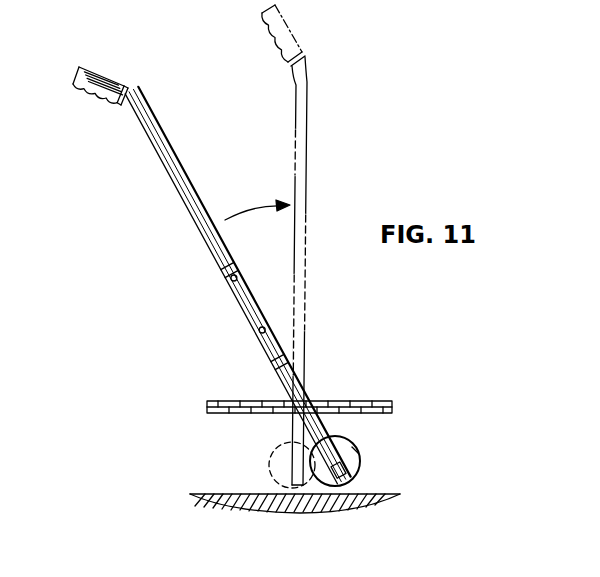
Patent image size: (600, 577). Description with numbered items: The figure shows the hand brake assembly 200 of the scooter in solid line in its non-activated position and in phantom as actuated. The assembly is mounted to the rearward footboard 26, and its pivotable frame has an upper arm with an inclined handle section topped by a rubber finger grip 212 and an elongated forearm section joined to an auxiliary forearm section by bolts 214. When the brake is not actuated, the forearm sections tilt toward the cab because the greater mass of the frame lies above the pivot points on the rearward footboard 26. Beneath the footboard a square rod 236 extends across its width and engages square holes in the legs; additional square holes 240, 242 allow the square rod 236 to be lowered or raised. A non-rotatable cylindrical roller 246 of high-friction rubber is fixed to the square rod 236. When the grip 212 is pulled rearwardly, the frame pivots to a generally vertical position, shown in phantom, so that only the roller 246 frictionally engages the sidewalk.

The hand brake assembly 200 is at (184, 201).
The rubber finger grip 212 is at (97, 97).
The bolts 214 is at (230, 280).
The rearward footboard 26 is at (354, 403).
The additional square hole 240 is at (312, 445).
The square rod 236 is at (348, 441).
The cylindrical roller 246 is at (359, 455).
The additional square hole 242 is at (356, 472).